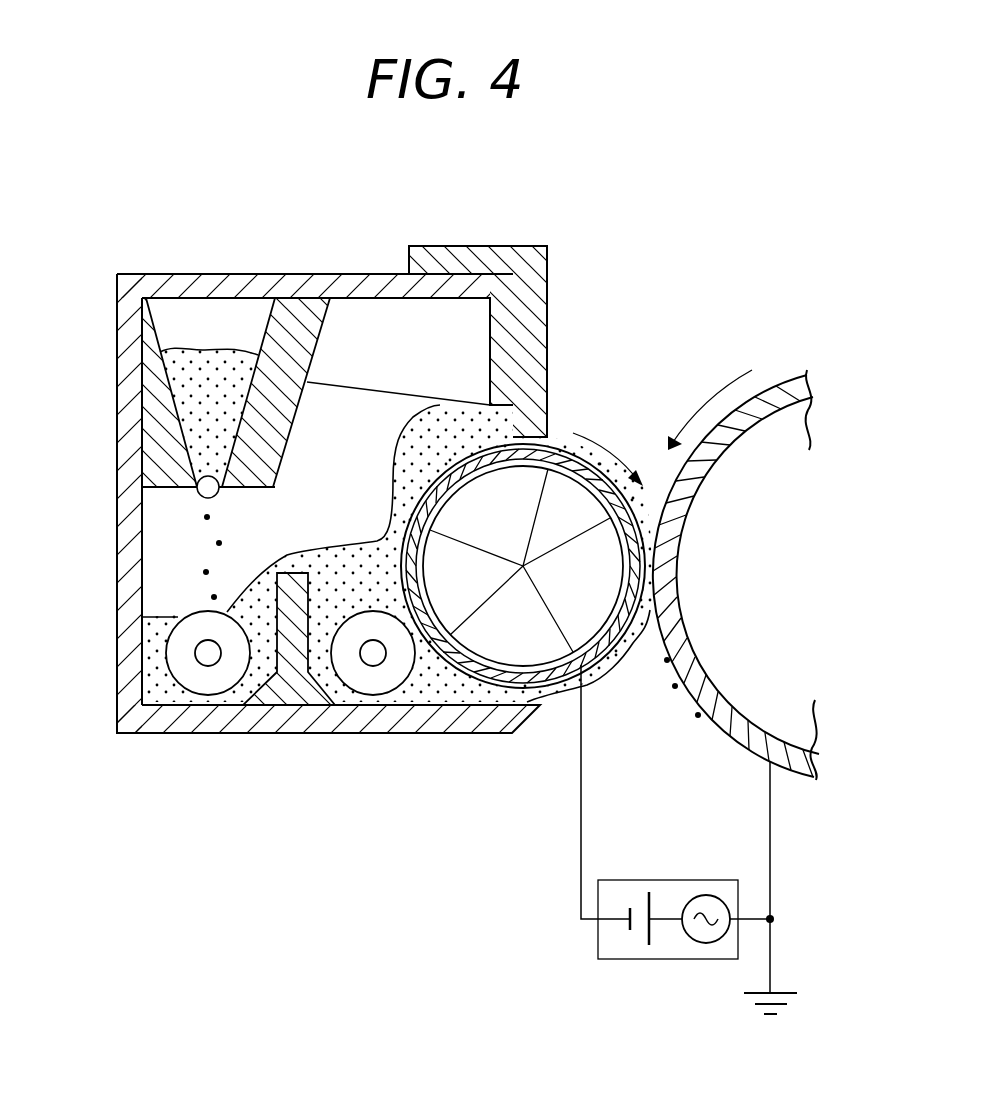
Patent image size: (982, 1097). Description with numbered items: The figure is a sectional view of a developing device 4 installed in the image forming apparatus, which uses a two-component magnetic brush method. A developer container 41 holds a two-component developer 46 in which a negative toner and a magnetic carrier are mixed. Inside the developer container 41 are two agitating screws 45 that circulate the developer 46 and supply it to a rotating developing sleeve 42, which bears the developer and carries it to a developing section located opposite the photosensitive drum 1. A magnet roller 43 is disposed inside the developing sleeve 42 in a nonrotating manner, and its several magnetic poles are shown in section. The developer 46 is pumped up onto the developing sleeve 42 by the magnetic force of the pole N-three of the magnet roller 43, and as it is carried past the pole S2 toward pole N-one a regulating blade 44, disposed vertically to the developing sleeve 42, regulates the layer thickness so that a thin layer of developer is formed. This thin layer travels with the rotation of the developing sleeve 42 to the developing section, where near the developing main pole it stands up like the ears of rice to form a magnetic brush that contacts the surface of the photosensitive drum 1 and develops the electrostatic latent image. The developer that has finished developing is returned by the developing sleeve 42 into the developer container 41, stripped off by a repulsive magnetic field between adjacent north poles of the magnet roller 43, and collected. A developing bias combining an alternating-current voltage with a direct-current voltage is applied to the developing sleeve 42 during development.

The photosensitive drum 1 is at (784, 381).
The developing device 4 is at (357, 260).
The developer container 41 is at (117, 486).
The developing sleeve 42 is at (553, 440).
The magnet roller 43 is at (553, 648).
The regulating blade 44 is at (542, 323).
The agitating screws 45 is at (218, 685).
The two-component developer 46 is at (385, 548).
The magnetic pole S2 is at (672, 960).